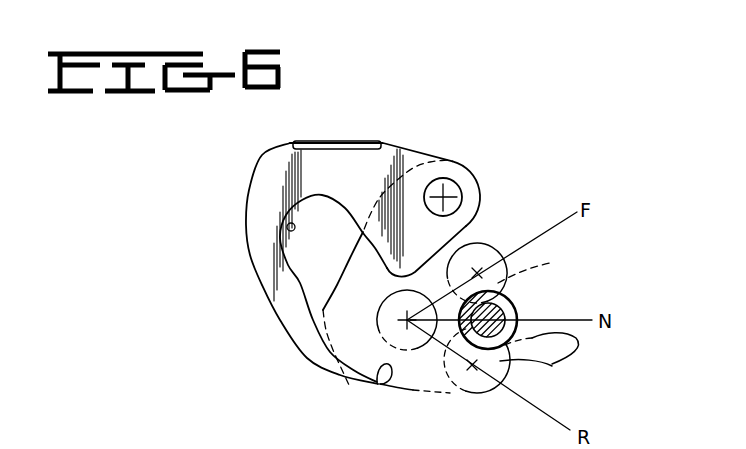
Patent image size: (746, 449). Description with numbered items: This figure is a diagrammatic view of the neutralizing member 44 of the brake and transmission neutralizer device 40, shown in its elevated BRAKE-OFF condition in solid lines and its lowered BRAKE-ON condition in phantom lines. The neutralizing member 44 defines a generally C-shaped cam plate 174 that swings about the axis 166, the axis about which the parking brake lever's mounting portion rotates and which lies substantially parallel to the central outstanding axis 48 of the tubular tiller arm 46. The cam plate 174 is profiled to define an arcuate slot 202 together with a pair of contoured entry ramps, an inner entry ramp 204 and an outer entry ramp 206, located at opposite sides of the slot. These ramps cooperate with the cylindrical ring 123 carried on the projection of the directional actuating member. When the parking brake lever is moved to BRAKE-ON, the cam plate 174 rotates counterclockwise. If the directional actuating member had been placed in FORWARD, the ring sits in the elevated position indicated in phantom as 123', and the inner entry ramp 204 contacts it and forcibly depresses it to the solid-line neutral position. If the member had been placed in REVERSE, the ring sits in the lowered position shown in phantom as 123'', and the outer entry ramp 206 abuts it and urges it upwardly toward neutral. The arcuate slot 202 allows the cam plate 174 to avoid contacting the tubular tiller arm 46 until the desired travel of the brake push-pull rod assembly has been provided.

The brake and transmission neutralizer device 40 is at (168, 331).
The neutralizing member 44 is at (370, 128).
The tubular tiller arm 46 is at (426, 362).
The central outstanding axis 48 is at (405, 317).
The cylindrical ring 123 is at (524, 316).
The cylindrical ring in elevated position 123' is at (560, 267).
The cylindrical ring in lowered position 123'' is at (573, 360).
The axis 166 is at (450, 183).
The C-shaped cam plate 174 is at (263, 178).
The arcuate slot 202 is at (287, 224).
The inner entry ramp 204 is at (466, 253).
The outer entry ramp 206 is at (382, 384).